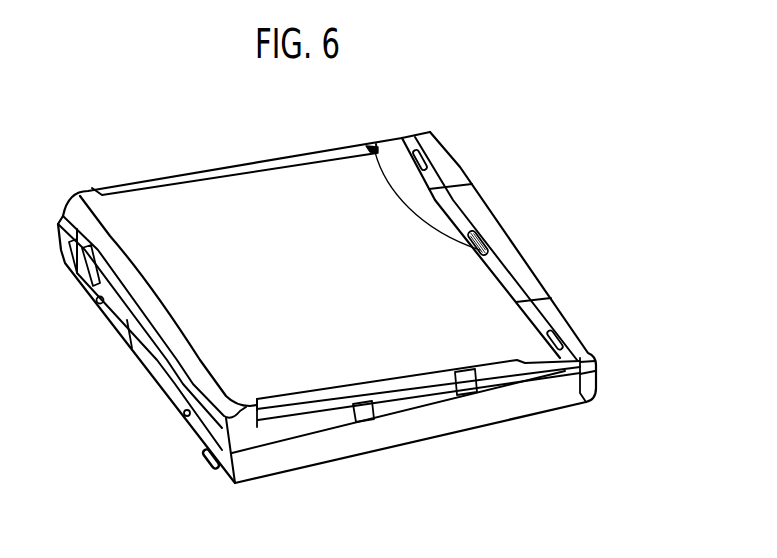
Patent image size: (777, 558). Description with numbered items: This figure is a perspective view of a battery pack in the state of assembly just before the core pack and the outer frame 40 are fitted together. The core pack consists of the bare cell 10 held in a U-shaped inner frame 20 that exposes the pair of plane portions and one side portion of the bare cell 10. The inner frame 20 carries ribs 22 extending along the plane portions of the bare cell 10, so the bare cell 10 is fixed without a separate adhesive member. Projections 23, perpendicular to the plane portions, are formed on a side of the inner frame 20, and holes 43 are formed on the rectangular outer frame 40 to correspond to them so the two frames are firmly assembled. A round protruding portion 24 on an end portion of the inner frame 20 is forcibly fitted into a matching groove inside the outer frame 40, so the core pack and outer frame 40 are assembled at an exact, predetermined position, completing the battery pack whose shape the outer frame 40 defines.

The bare cell 10 is at (198, 216).
The ribs 22 is at (262, 165).
The holes 43 is at (375, 152).
The projections 23 is at (548, 340).
The inner frame 20 is at (320, 413).
The outer frame 40 is at (500, 402).
The protruding portion 24 is at (223, 470).